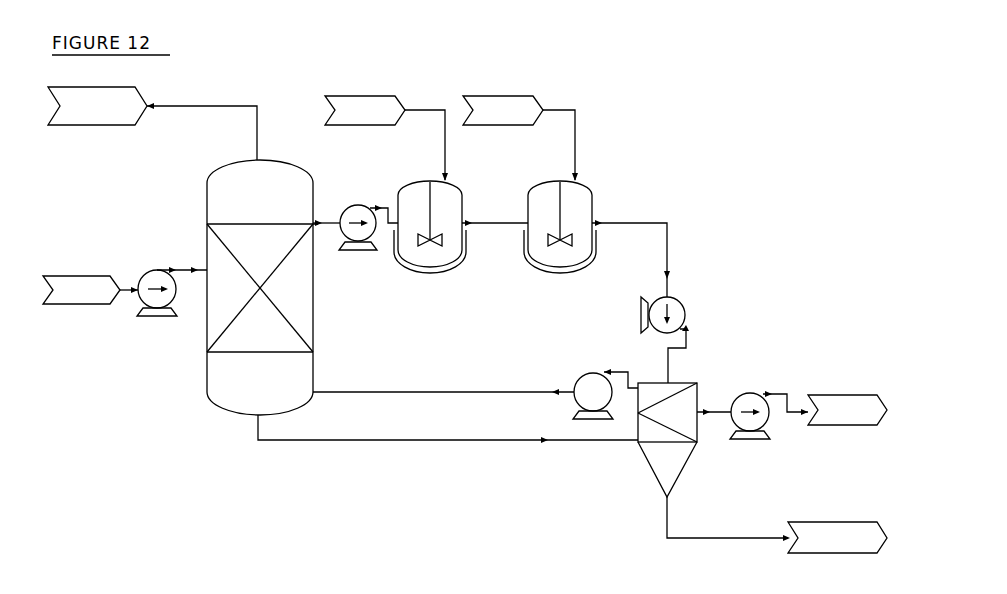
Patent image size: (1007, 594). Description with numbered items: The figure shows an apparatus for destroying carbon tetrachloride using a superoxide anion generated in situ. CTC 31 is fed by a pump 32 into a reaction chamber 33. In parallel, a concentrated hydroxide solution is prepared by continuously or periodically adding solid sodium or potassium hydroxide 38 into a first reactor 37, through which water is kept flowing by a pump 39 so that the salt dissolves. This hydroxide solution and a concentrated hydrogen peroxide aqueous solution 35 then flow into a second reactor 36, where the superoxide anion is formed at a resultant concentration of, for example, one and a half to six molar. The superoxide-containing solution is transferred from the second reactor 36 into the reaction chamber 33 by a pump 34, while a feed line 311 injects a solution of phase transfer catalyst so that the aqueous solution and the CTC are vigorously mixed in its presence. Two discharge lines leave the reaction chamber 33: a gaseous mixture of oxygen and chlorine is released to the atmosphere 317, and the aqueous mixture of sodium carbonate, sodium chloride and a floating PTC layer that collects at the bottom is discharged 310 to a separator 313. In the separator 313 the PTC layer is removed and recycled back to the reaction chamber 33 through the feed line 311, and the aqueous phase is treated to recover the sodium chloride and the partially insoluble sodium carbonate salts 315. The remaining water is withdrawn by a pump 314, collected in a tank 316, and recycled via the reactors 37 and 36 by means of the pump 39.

The CTC 31 is at (90, 308).
The pump 32 is at (155, 319).
The reaction chamber 33 is at (237, 287).
The pump 34 is at (355, 254).
The concentrated hydrogen peroxide aqueous solution 35 is at (386, 138).
The second reactor 36 is at (461, 245).
The first reactor 37 is at (603, 240).
The solid hydroxide salt 38 is at (520, 138).
The pump 39 is at (674, 340).
The aqueous mixture discharge 310 is at (448, 426).
The feed line 311 is at (475, 396).
The separator 313 is at (643, 440).
The pump 314 is at (752, 443).
The sodium carbonate salts 315 is at (777, 545).
The tank 316 is at (847, 429).
The atmosphere release 317 is at (151, 126).